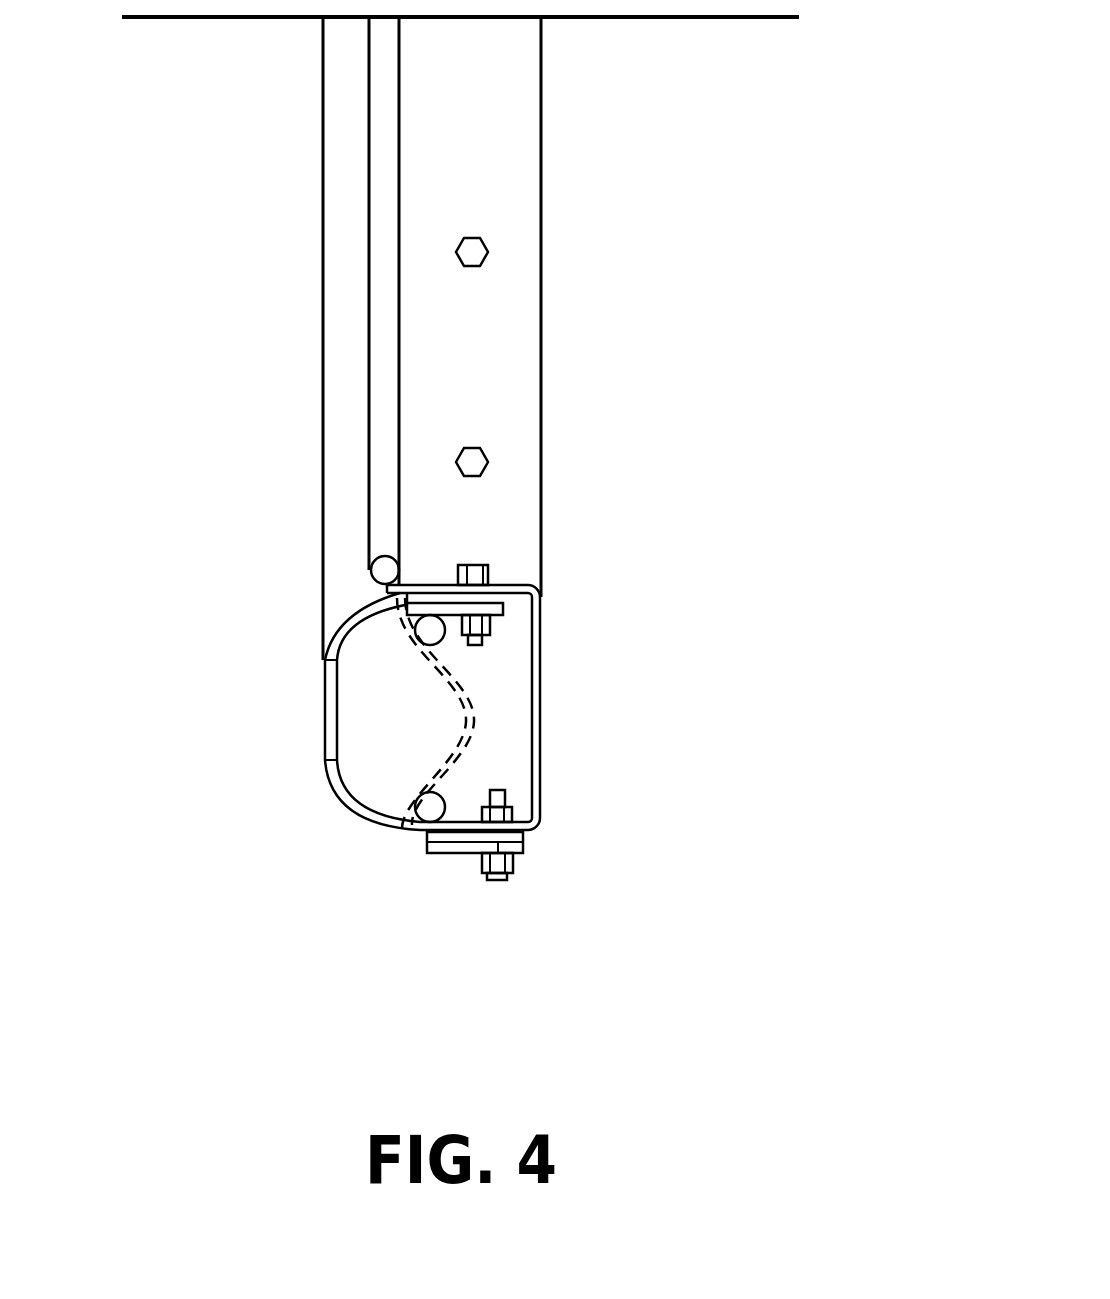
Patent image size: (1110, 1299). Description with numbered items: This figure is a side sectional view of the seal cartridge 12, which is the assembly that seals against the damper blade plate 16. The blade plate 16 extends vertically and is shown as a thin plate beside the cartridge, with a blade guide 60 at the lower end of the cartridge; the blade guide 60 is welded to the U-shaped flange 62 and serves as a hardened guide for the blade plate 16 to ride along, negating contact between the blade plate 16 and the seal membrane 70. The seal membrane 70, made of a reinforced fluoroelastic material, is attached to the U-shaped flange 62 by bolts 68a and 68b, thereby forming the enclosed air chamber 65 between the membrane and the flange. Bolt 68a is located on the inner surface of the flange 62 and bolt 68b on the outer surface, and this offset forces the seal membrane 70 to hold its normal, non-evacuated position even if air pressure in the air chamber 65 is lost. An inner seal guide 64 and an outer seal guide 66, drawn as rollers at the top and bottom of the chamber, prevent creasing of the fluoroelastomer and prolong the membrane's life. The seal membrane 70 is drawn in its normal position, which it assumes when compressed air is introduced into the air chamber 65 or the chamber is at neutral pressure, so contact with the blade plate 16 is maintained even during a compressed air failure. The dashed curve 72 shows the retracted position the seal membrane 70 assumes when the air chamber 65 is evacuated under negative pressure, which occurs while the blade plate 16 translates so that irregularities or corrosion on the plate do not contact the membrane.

The seal cartridge 12 is at (590, 190).
The blade plate 16 is at (327, 190).
The blade guide 60 is at (382, 562).
The U-shaped flange 62 is at (420, 590).
The inner seal guide 64 is at (445, 642).
The air chamber 65 is at (508, 758).
The outer seal guide 66 is at (423, 808).
The bolt 68a is at (490, 573).
The bolt 68b is at (487, 877).
The seal membrane 70 is at (325, 653).
The position of seal membrane 72 is at (430, 758).